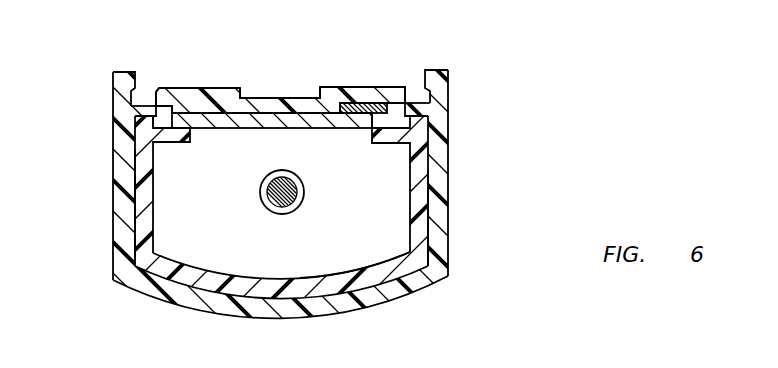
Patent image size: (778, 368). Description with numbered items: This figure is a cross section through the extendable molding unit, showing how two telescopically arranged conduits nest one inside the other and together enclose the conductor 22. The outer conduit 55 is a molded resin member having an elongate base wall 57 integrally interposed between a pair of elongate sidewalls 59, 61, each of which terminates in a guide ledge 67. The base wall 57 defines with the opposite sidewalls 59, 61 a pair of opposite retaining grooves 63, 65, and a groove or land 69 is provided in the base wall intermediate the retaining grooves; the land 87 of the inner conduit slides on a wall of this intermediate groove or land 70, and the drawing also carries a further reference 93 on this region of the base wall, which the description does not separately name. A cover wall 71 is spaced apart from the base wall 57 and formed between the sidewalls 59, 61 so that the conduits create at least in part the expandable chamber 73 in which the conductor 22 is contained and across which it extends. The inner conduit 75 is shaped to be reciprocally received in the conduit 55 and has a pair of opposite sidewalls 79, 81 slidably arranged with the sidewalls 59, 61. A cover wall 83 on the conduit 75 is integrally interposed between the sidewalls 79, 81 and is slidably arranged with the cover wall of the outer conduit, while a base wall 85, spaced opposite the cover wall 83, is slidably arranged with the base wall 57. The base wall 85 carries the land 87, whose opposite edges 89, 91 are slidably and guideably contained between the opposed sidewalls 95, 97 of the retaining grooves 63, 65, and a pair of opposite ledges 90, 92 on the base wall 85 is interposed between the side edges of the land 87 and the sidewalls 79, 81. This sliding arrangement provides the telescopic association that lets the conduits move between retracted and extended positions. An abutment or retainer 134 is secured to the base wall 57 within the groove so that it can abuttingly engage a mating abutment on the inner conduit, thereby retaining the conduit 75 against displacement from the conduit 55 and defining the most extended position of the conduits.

The conductor 22 is at (260, 203).
The conduit 55 is at (458, 264).
The base wall 57 is at (321, 95).
The sidewall 59 is at (447, 197).
The sidewall 61 is at (122, 212).
The retaining groove 63 is at (420, 99).
The retaining groove 65 is at (145, 100).
The guide ledge 67 is at (127, 73).
The groove 69 is at (140, 292).
The intermediate groove or land 70 is at (252, 96).
The cover wall 71 is at (226, 300).
The chamber 73 is at (358, 238).
The conduit 75 is at (374, 280).
The sidewall 79 is at (418, 236).
The sidewall 81 is at (145, 231).
The cover wall 83 is at (258, 290).
The base wall 85 is at (353, 125).
The land 87 is at (263, 132).
The edge 89 is at (408, 112).
The ledge 90 is at (152, 166).
The edge 91 is at (165, 117).
The ledge 92 is at (405, 161).
The cover recess 93 is at (284, 97).
The sidewall of groove 95 is at (410, 102).
The sidewall of groove 97 is at (148, 100).
The abutment 134 is at (368, 110).